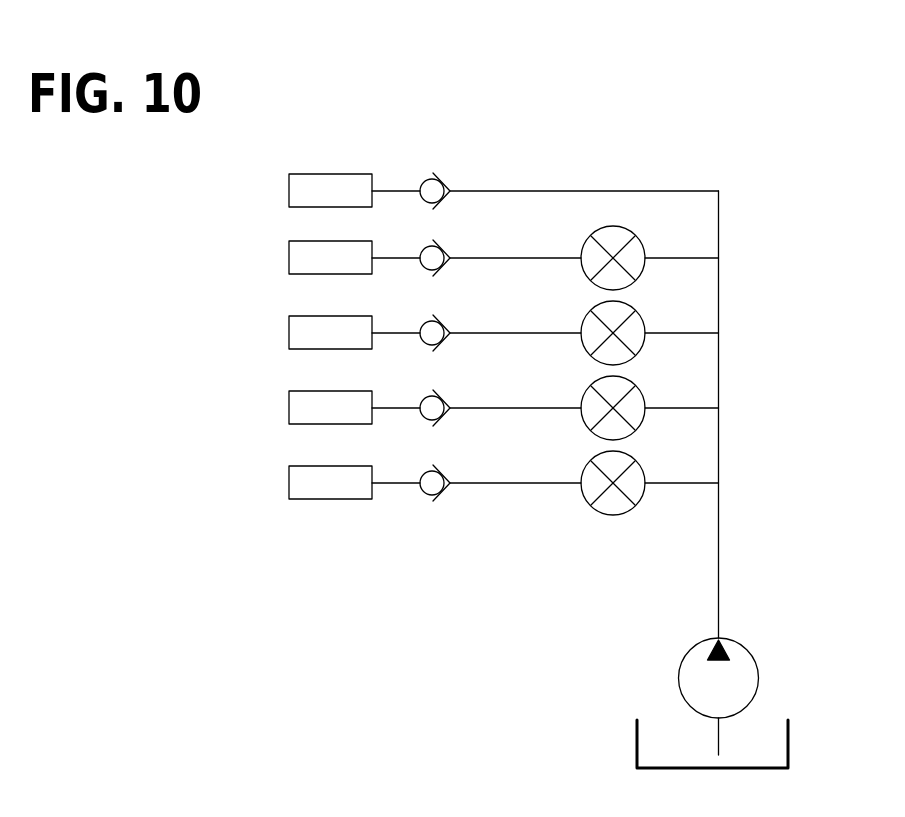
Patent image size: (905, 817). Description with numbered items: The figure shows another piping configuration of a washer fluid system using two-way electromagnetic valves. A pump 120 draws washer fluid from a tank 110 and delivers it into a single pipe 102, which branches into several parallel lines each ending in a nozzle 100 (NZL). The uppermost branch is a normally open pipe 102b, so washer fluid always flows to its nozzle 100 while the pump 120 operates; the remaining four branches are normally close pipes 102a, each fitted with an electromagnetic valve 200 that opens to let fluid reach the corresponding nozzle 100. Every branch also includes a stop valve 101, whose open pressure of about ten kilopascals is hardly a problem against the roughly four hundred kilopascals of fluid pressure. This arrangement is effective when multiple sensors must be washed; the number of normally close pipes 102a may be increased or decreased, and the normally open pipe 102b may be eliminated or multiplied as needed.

The nozzle 100 is at (289, 187).
The stop valve 101 is at (424, 176).
The pipe 102 is at (719, 454).
The normally close pipe 102a is at (551, 258).
The normally open pipe 102b is at (551, 191).
The electromagnetic valve 200 is at (625, 229).
The pump 120 is at (742, 641).
The tank 110 is at (789, 735).